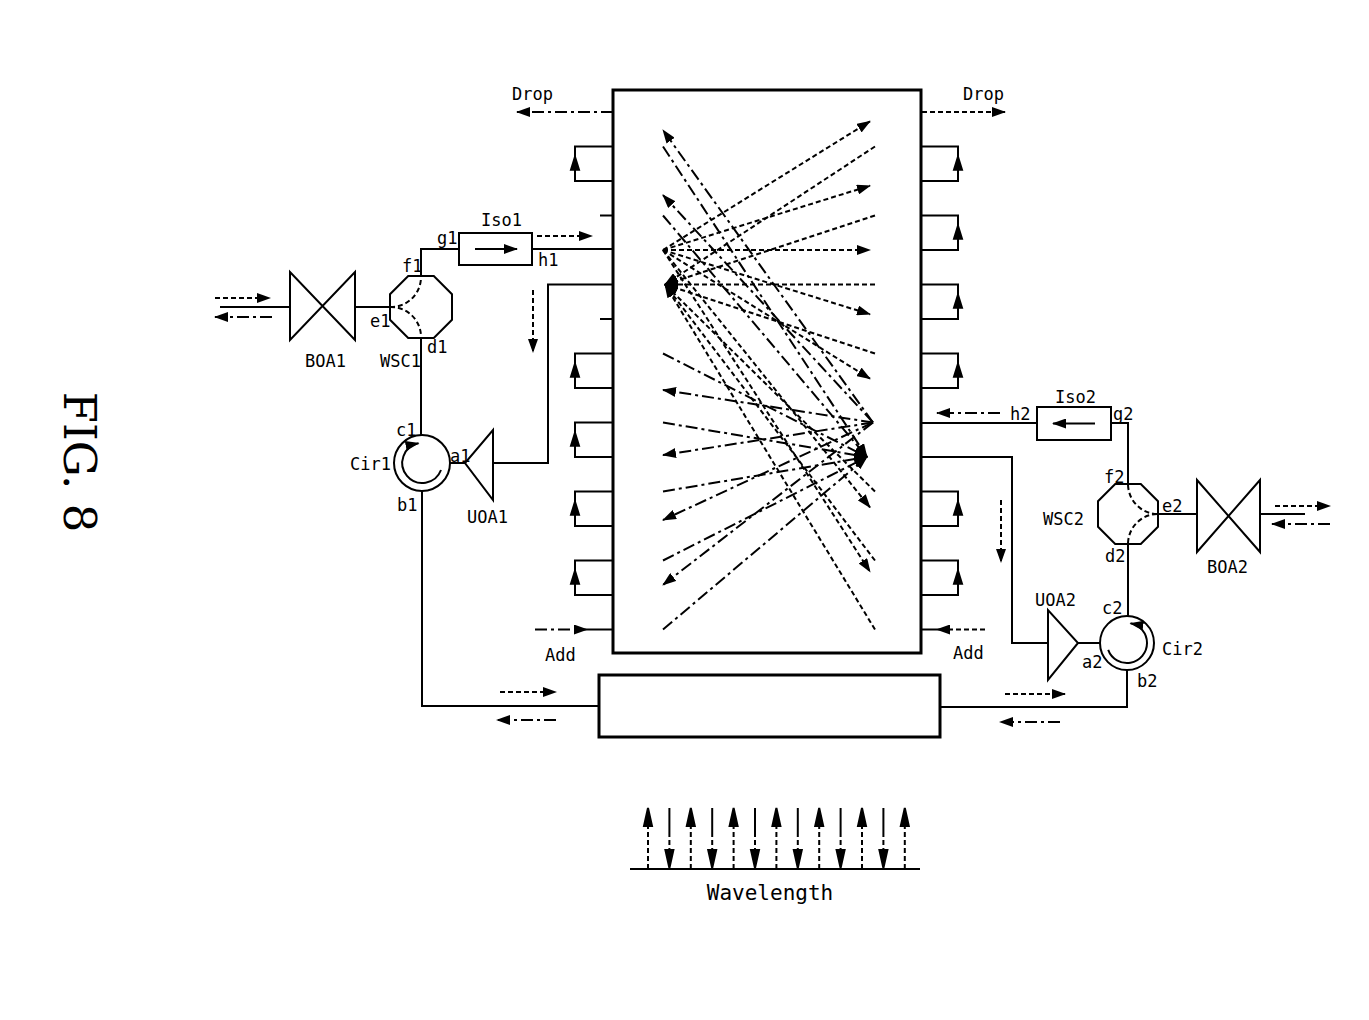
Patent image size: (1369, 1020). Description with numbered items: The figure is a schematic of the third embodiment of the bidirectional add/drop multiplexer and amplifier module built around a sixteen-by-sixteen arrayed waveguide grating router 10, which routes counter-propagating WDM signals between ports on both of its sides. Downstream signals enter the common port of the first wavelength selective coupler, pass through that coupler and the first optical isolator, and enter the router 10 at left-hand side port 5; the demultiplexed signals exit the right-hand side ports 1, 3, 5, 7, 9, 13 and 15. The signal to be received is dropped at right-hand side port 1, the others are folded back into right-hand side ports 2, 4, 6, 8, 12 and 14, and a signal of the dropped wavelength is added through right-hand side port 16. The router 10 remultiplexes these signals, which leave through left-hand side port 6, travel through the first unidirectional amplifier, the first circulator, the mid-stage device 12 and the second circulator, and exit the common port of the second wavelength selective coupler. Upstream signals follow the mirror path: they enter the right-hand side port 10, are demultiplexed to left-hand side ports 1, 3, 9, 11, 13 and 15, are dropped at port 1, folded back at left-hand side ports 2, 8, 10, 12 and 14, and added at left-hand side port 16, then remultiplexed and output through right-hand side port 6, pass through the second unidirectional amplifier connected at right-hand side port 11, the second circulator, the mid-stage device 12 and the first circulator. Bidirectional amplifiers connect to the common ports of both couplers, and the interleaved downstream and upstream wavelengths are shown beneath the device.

The arrayed waveguide grating router 10 is at (768, 90).
The mid-stage device 12 is at (917, 738).
The port 1 is at (761, 111).
The port 2 is at (766, 159).
The port 3 is at (770, 180).
The port 4 is at (781, 228).
The port 5 is at (717, 249).
The port 6 is at (727, 369).
The port 7 is at (751, 318).
The port 8 is at (766, 366).
The port 9 is at (770, 387).
The port 11 is at (840, 544).
The port 13 is at (770, 525).
The port 14 is at (766, 573).
The port 15 is at (770, 594).
The port 16 is at (760, 629).